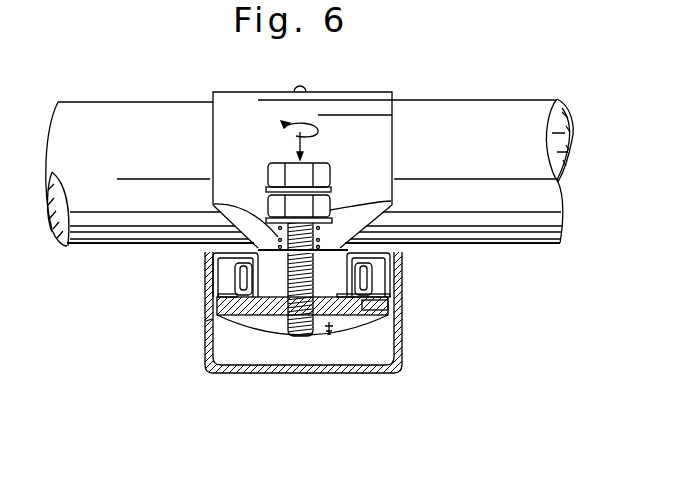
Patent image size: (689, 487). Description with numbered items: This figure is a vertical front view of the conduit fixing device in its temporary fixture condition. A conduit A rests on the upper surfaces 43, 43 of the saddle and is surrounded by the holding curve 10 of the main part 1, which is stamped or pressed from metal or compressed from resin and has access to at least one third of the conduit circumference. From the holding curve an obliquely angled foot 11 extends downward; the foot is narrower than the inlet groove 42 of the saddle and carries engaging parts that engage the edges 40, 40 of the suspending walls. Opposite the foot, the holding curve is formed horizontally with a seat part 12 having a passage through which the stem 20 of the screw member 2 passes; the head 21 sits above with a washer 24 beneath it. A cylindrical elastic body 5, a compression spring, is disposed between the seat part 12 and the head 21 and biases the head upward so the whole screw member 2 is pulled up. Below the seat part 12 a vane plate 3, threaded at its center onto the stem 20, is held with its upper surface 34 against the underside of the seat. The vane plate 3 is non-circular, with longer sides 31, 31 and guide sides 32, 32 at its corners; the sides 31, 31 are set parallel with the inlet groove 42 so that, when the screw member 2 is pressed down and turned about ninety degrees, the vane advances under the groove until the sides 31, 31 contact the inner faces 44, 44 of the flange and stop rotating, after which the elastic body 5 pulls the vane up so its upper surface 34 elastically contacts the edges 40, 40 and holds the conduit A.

The conduit A is at (532, 105).
The main part 1 is at (380, 110).
The screw member 2 is at (297, 338).
The vane plate 3 is at (350, 306).
The cylindrical elastic body 5 is at (214, 207).
The holding curve 10 is at (392, 142).
The foot 11 is at (326, 282).
The seat part 12 is at (390, 302).
The stem 20 is at (217, 338).
The head 21 is at (318, 165).
The washer 24 is at (400, 242).
The sides 31 is at (217, 308).
The guide sides 32 is at (370, 308).
The upper surface 34 is at (278, 282).
The edges of the suspending walls 40 is at (235, 282).
The inlet groove 42 is at (213, 320).
The upper surfaces 43 is at (215, 238).
The inner faces of the flange 44 is at (210, 358).